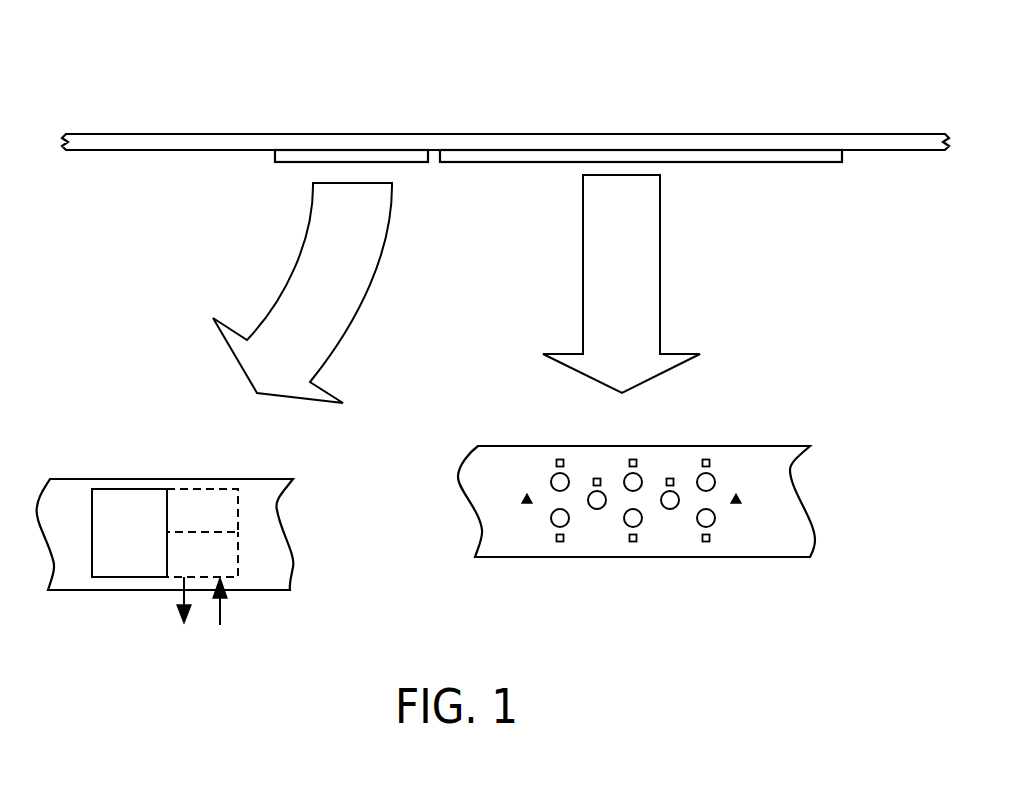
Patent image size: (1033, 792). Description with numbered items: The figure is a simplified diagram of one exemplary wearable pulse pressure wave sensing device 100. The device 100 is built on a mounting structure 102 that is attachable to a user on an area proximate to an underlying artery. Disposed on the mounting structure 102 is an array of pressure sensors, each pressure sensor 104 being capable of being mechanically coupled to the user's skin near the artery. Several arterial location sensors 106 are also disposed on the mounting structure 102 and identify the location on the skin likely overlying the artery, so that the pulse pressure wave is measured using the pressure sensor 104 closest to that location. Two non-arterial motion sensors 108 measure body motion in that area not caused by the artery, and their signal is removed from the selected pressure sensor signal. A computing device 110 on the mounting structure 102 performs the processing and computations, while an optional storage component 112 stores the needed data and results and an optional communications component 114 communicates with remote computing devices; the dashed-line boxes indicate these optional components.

The wearable pulse pressure wave sensing device 100 is at (756, 111).
The mounting structure 102 is at (163, 140).
The pressure sensor 104 is at (715, 478).
The arterial location sensor 106 is at (558, 455).
The non-arterial motion sensor 108 is at (738, 504).
The computing device 110 is at (125, 498).
The storage component 112 is at (203, 510).
The communications component 114 is at (228, 561).